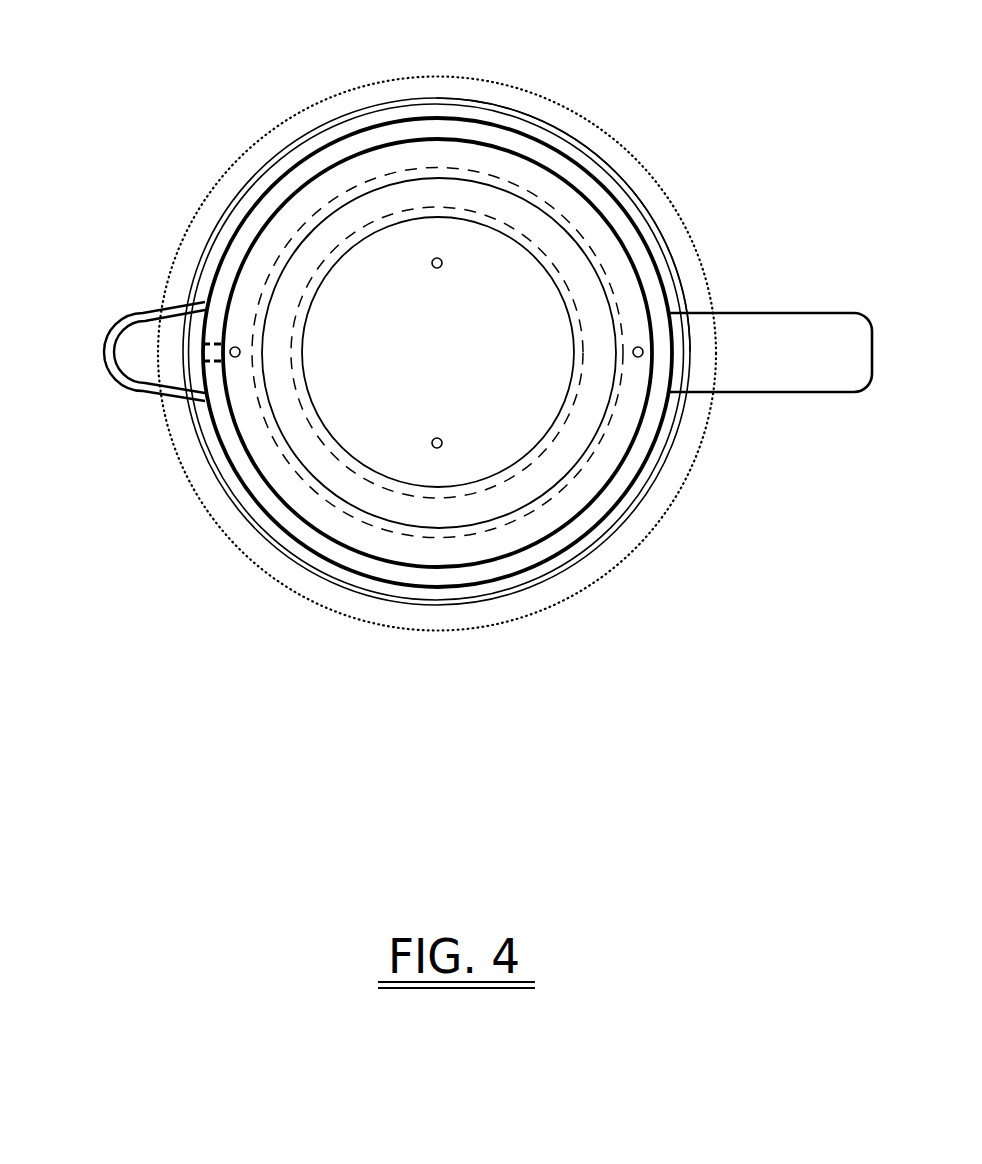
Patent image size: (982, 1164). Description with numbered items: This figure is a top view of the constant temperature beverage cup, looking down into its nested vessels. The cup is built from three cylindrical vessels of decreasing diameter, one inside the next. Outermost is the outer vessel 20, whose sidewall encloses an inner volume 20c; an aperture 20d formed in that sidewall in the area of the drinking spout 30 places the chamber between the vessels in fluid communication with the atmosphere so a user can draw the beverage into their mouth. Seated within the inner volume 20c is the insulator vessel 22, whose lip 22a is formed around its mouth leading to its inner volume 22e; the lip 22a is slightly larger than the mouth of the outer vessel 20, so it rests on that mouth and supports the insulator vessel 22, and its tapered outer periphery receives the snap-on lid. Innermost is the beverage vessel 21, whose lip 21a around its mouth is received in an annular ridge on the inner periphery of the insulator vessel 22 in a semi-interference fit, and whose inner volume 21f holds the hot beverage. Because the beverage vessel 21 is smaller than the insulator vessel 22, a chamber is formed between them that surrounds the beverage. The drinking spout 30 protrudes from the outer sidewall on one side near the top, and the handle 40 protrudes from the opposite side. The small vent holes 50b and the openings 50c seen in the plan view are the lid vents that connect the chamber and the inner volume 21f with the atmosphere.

The outer vessel 20 is at (293, 165).
The inner volume 20c is at (287, 222).
The aperture 20d is at (205, 355).
The beverage vessel 21 is at (503, 225).
The inner volume 21f is at (522, 313).
The lip 21a is at (658, 233).
The insulator vessel 22 is at (543, 502).
The lip 22a is at (655, 487).
The inner volume 22e is at (488, 503).
The drinking spout 30 is at (137, 393).
The handle 40 is at (760, 333).
The vent holes 50b is at (633, 352).
The vertical vent holes 50c is at (437, 440).